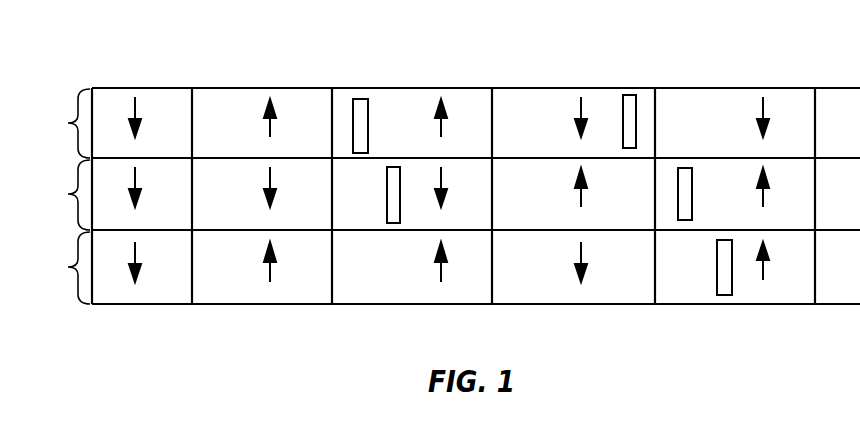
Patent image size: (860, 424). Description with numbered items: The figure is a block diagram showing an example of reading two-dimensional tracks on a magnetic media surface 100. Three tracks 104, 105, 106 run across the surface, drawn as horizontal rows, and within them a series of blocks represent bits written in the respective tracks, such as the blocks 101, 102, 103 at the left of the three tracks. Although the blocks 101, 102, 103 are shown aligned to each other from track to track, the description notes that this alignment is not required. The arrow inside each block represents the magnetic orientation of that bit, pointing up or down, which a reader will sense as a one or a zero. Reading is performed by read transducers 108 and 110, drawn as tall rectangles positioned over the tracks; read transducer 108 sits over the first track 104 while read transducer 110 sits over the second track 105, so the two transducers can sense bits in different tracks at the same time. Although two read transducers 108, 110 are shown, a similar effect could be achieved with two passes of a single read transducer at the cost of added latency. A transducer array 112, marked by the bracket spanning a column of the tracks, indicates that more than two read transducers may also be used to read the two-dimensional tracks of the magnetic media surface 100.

The magnetic media surface 100 is at (684, 376).
The block 101 is at (173, 154).
The block 102 is at (173, 226).
The block 103 is at (173, 298).
The track 104 is at (54, 123).
The track 105 is at (54, 195).
The track 106 is at (54, 268).
The read transducer 108 is at (362, 87).
The read transducer 110 is at (393, 166).
The transducer array 112 is at (772, 54).